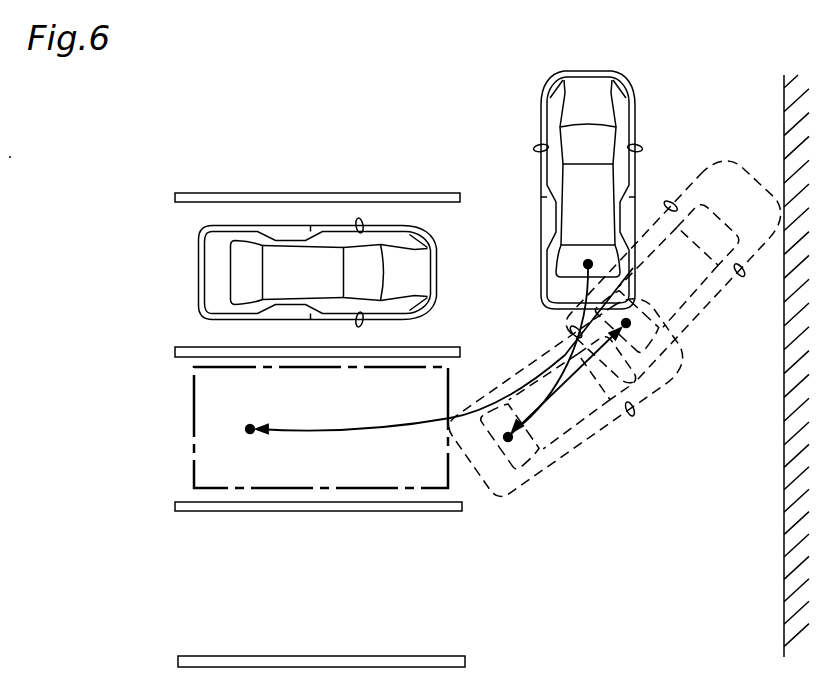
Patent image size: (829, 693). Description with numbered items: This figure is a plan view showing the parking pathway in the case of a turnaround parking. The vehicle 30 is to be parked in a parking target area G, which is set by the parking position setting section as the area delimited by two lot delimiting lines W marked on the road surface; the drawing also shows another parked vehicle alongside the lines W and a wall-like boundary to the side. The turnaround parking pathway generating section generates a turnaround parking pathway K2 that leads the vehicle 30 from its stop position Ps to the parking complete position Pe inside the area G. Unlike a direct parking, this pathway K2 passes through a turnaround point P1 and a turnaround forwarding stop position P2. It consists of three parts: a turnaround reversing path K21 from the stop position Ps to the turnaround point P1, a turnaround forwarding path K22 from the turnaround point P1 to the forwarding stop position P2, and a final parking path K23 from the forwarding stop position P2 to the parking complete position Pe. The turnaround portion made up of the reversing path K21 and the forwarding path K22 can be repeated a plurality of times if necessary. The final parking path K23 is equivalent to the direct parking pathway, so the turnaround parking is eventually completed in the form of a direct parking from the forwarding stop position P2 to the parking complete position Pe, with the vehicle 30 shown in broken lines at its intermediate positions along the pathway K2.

The lot delimiting line W is at (265, 192).
The parking target area G is at (193, 468).
The vehicle 30 is at (633, 128).
The stop position Ps is at (588, 262).
The parking complete position Pe is at (247, 428).
The turnaround point P1 is at (506, 442).
The turnaround forwarding stop position P2 is at (664, 330).
The turnaround parking pathway K2 is at (450, 392).
The turnaround reversing path K21 is at (568, 360).
The turnaround forwarding path K22 is at (578, 373).
The final parking path K23 is at (292, 425).